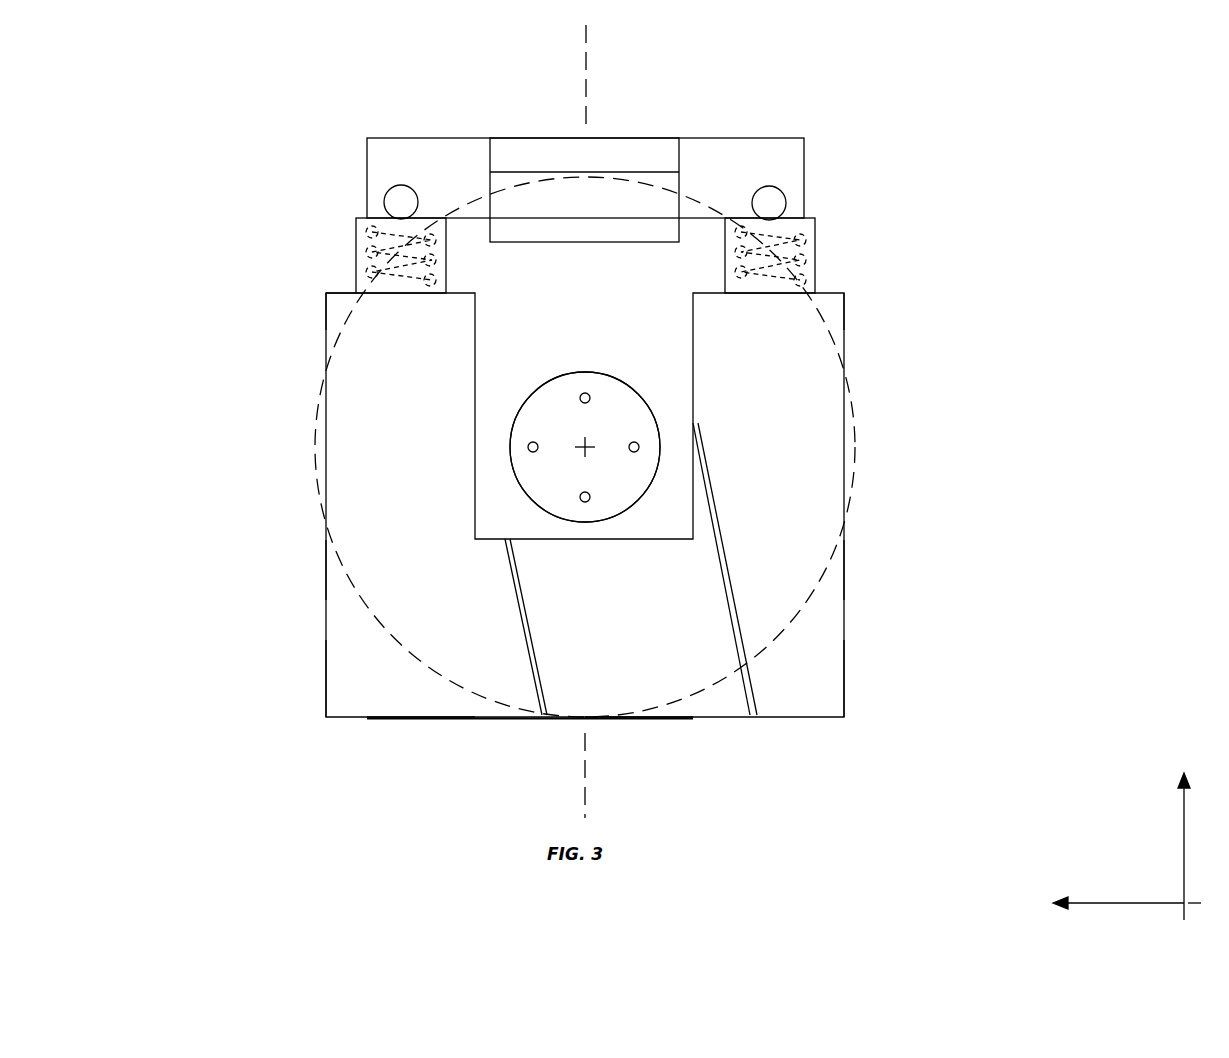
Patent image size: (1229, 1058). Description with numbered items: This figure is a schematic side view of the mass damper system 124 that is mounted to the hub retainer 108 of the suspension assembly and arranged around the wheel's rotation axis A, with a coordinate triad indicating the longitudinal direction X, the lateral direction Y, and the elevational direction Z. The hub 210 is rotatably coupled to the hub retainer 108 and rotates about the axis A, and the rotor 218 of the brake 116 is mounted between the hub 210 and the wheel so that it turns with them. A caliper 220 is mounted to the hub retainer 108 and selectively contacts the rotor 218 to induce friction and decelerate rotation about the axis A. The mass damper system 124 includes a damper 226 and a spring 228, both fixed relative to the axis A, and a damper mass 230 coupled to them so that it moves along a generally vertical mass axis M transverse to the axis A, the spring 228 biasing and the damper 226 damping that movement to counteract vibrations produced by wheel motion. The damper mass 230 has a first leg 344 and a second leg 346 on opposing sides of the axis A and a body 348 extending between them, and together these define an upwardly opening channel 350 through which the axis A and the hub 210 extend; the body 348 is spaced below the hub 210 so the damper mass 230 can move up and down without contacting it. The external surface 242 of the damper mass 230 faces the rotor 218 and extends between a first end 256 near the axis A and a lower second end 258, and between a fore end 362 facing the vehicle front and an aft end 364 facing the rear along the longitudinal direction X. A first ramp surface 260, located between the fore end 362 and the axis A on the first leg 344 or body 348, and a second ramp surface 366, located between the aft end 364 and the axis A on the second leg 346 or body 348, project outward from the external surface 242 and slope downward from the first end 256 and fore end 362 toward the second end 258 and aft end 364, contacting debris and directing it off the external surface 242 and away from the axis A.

The mass axis M is at (586, 55).
The hub retainer 108 is at (366, 173).
The brake 116 is at (477, 200).
The caliper 220 is at (679, 172).
The spring 228 is at (430, 238).
The damper 226 is at (432, 262).
The first end 256 is at (341, 293).
The first leg 344 is at (326, 315).
The second leg 346 is at (844, 323).
The channel 350 is at (476, 380).
The axis A is at (588, 450).
The second ramp surface 366 is at (713, 530).
The fore end 362 is at (326, 567).
The aft end 364 is at (844, 567).
The rotor 218 is at (818, 592).
The ramp surface 260 is at (508, 570).
The hub 210 is at (585, 522).
The damper mass 230 is at (326, 663).
The mass damper system 124 is at (845, 668).
The external surface 242 is at (326, 700).
The body 348 is at (475, 717).
The second end 258 is at (668, 717).
The longitudinal direction X is at (1109, 907).
The lateral direction Y is at (1184, 903).
The elevational direction Z is at (1183, 824).